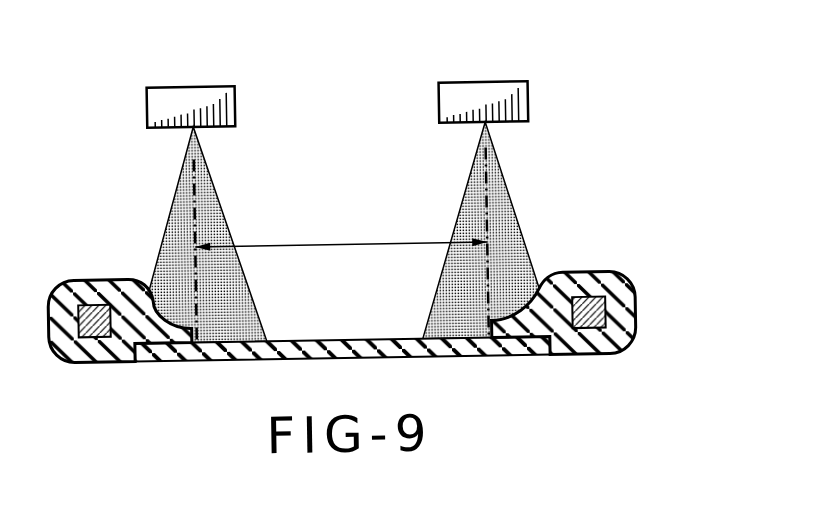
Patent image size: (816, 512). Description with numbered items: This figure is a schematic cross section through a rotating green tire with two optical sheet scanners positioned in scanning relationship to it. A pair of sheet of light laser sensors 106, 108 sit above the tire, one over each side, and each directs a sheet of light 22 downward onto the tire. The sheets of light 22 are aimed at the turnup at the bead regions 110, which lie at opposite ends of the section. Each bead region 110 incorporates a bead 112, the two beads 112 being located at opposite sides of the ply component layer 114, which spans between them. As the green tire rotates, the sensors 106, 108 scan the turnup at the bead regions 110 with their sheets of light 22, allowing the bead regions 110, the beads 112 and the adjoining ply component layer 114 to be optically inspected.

The sheet of light 22 is at (177, 217).
The sheet of light laser sensor 106 is at (188, 95).
The sheet of light laser sensor 108 is at (483, 94).
The bead region 110 is at (589, 281).
The bead 112 is at (598, 319).
The ply component layer 114 is at (355, 338).